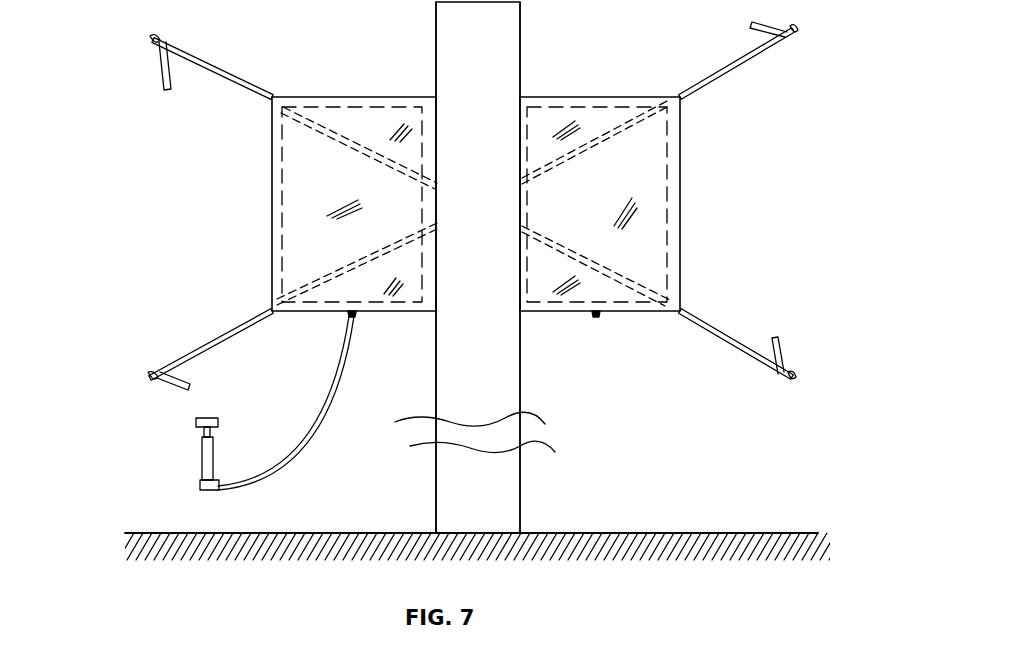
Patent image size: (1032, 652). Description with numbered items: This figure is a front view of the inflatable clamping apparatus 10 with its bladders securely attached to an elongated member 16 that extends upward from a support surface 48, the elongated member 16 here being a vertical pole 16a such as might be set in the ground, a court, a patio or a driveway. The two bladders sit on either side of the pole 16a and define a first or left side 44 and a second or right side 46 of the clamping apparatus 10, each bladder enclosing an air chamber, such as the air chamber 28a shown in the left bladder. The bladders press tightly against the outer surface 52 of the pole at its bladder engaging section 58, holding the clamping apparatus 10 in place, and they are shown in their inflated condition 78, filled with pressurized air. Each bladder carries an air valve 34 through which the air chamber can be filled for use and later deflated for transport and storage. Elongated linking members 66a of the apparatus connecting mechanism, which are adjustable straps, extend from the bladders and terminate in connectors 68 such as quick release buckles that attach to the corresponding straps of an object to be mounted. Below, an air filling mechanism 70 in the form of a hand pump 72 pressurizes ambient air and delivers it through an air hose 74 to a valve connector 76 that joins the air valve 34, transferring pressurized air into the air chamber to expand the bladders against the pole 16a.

The clamping apparatus 10 is at (706, 163).
The elongated member 16 is at (459, 478).
The vertical pole 16a is at (502, 58).
The air chamber 28a is at (307, 180).
The air valve 34 is at (354, 318).
The first or left side 44 is at (302, 204).
The second or right side 46 is at (703, 207).
The support surface 48 is at (761, 528).
The outer surface of the elongated member 52 is at (434, 50).
The bladder engaging section 58 is at (488, 238).
The linking members of the apparatus connecting mechanism 66a is at (226, 80).
The connectors 68 is at (152, 46).
The air filling mechanism 70 is at (152, 460).
The hand pump 72 is at (201, 457).
The air hose 74 is at (284, 455).
The valve connector 76 is at (346, 317).
The inflated condition 78 is at (256, 253).